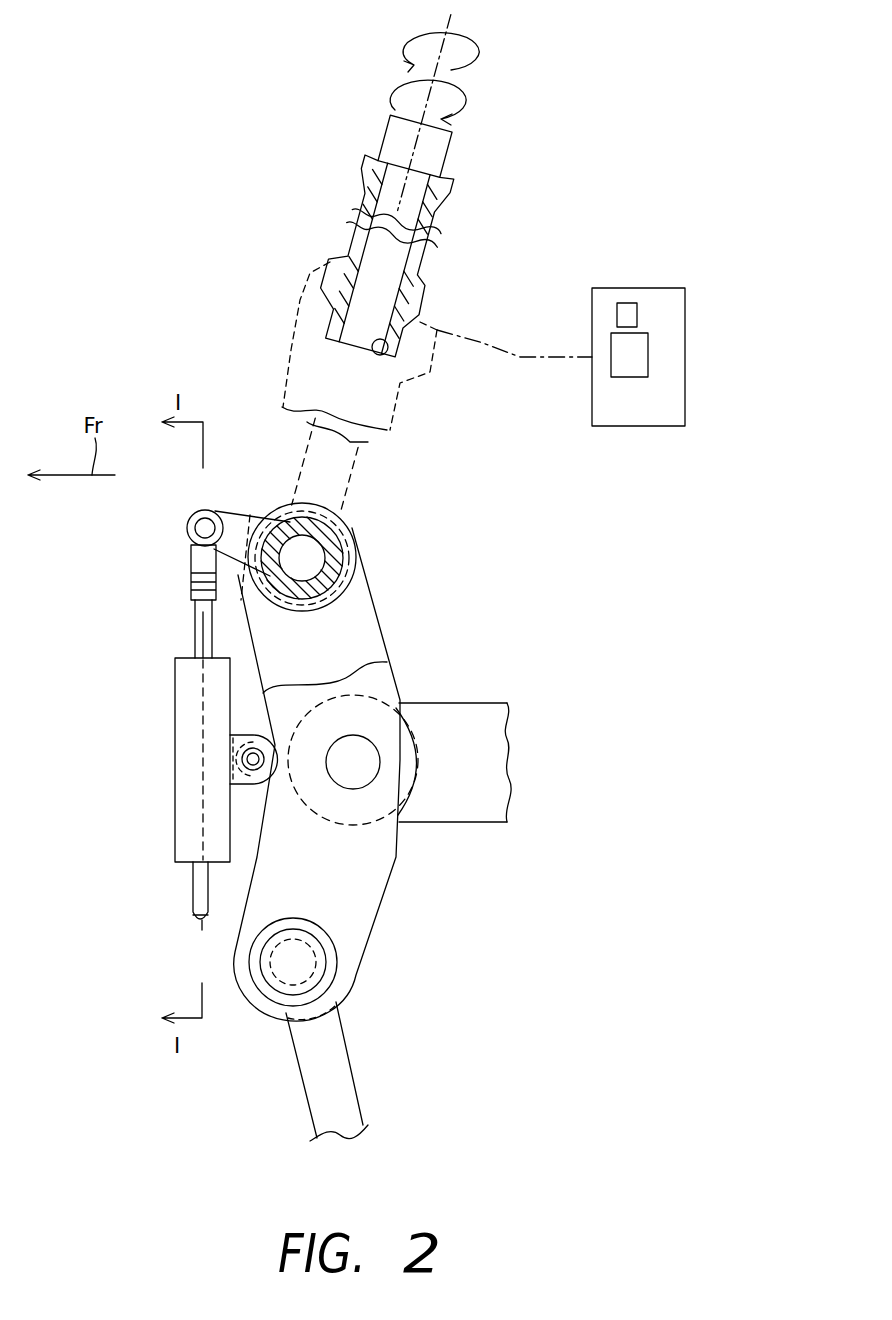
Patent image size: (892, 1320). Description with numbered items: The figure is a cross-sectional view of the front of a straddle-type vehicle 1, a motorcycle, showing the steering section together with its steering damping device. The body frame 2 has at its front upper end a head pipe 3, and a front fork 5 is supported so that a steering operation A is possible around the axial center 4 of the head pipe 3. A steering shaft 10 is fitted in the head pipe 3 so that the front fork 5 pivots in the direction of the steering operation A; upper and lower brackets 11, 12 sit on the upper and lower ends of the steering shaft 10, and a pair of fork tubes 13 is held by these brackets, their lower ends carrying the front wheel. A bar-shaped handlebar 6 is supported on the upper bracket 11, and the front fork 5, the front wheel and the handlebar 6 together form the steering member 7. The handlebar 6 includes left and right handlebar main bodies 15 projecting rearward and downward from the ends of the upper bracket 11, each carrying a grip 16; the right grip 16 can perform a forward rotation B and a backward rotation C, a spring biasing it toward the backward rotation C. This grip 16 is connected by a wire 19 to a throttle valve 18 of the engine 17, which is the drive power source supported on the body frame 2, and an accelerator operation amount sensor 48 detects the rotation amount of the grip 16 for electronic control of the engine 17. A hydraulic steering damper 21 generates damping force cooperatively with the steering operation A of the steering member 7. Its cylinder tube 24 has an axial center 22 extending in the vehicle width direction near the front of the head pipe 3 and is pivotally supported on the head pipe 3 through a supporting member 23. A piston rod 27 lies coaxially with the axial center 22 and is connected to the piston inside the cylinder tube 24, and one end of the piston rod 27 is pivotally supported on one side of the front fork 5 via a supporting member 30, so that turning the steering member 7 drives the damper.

The straddle-type vehicle 1 is at (602, 118).
The body frame 2 is at (498, 699).
The head pipe 3 is at (416, 747).
The axial center 4 is at (355, 762).
The front fork 5 is at (402, 650).
The handlebar 6 is at (365, 1057).
The steering member 7 is at (496, 601).
The steering shaft 10 is at (343, 775).
The upper bracket 11 is at (357, 899).
The lower bracket 12 is at (358, 612).
The fork tubes 13 is at (336, 548).
The handlebar main bodies 15 is at (352, 442).
The grip 16 is at (436, 207).
The engine 17 is at (663, 276).
The throttle valve 18 is at (631, 372).
The wire 19 is at (530, 360).
The steering damper 21 is at (163, 706).
The axial center 22 is at (238, 768).
The supporting member 23 is at (253, 760).
The cylinder tube 24 is at (155, 737).
The piston rod 27 is at (195, 636).
The supporting member 30 is at (205, 528).
The accelerator operation amount sensor 48 is at (623, 303).
The steering operation A is at (141, 324).
The forward rotation B is at (463, 113).
The backward rotation C is at (478, 58).